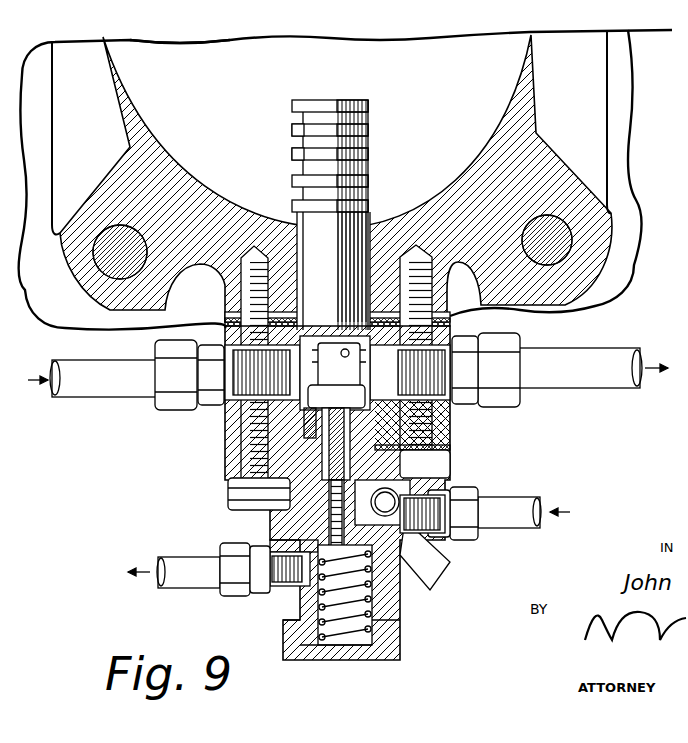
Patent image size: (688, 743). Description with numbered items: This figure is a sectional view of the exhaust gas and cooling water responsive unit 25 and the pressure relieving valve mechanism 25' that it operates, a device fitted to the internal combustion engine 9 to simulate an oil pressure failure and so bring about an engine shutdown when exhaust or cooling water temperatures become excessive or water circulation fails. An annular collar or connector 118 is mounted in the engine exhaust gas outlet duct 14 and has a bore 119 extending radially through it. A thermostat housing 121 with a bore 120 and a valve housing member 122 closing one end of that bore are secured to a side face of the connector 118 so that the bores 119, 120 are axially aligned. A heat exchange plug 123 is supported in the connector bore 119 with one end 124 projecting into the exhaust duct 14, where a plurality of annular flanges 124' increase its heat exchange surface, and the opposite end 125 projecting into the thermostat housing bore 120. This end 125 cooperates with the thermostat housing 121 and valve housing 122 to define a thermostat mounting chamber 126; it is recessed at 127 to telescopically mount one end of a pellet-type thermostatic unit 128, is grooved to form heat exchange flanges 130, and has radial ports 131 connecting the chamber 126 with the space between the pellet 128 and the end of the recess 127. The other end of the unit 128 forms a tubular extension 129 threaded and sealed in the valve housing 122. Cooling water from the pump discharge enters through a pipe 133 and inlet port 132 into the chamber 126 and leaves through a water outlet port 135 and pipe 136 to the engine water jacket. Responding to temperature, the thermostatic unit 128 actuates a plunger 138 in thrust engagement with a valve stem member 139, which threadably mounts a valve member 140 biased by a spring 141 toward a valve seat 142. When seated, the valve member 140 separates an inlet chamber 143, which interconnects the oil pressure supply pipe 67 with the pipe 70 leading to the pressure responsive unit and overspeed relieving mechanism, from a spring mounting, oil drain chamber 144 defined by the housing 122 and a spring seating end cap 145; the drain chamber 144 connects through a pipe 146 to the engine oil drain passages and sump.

The internal combustion engine 9 is at (625, 170).
The engine exhaust gas outlet duct 14 is at (168, 60).
The annular collar or connector 118 is at (537, 80).
The bore 119 is at (297, 226).
The exhaust duct projecting end of heat exchange plug 124 is at (333, 199).
The annular flanges 124' is at (275, 140).
The heat exchange plug 123 is at (358, 238).
The inlet port 132 is at (337, 304).
The recess 127 is at (290, 333).
The thermostat housing 121 is at (228, 442).
The exhaust gas and cooling water responsive unit 25 is at (309, 357).
The bore 120 is at (385, 408).
The heat exchange flanges 130 is at (262, 372).
The radial ports 131 is at (410, 372).
The thermostat end of heat exchange plug 125 is at (335, 373).
The water outlet port 135 is at (336, 396).
The tubular extension 129 is at (322, 428).
The thermostatic unit 128 is at (294, 417).
The thermostat mounting chamber 126 is at (407, 459).
The valve stem member 139 is at (425, 464).
The plunger 138 is at (259, 494).
The valve seat 142 is at (392, 512).
The pipe or conduit 70 is at (440, 572).
The inlet chamber 143 is at (330, 532).
The valve member 140 is at (280, 546).
The valve housing member 122 is at (282, 592).
The spring 141 is at (400, 622).
The spring mounting, oil drain chamber 144 is at (322, 636).
The spring seating end cap 145 is at (400, 658).
The pipe or conduit 133 is at (105, 382).
The pipe or conduit 136 is at (605, 360).
The conduit or pipe 67 is at (510, 510).
The pressure relieving valve mechanism 25' is at (439, 525).
The pipe or conduit 146 is at (200, 570).